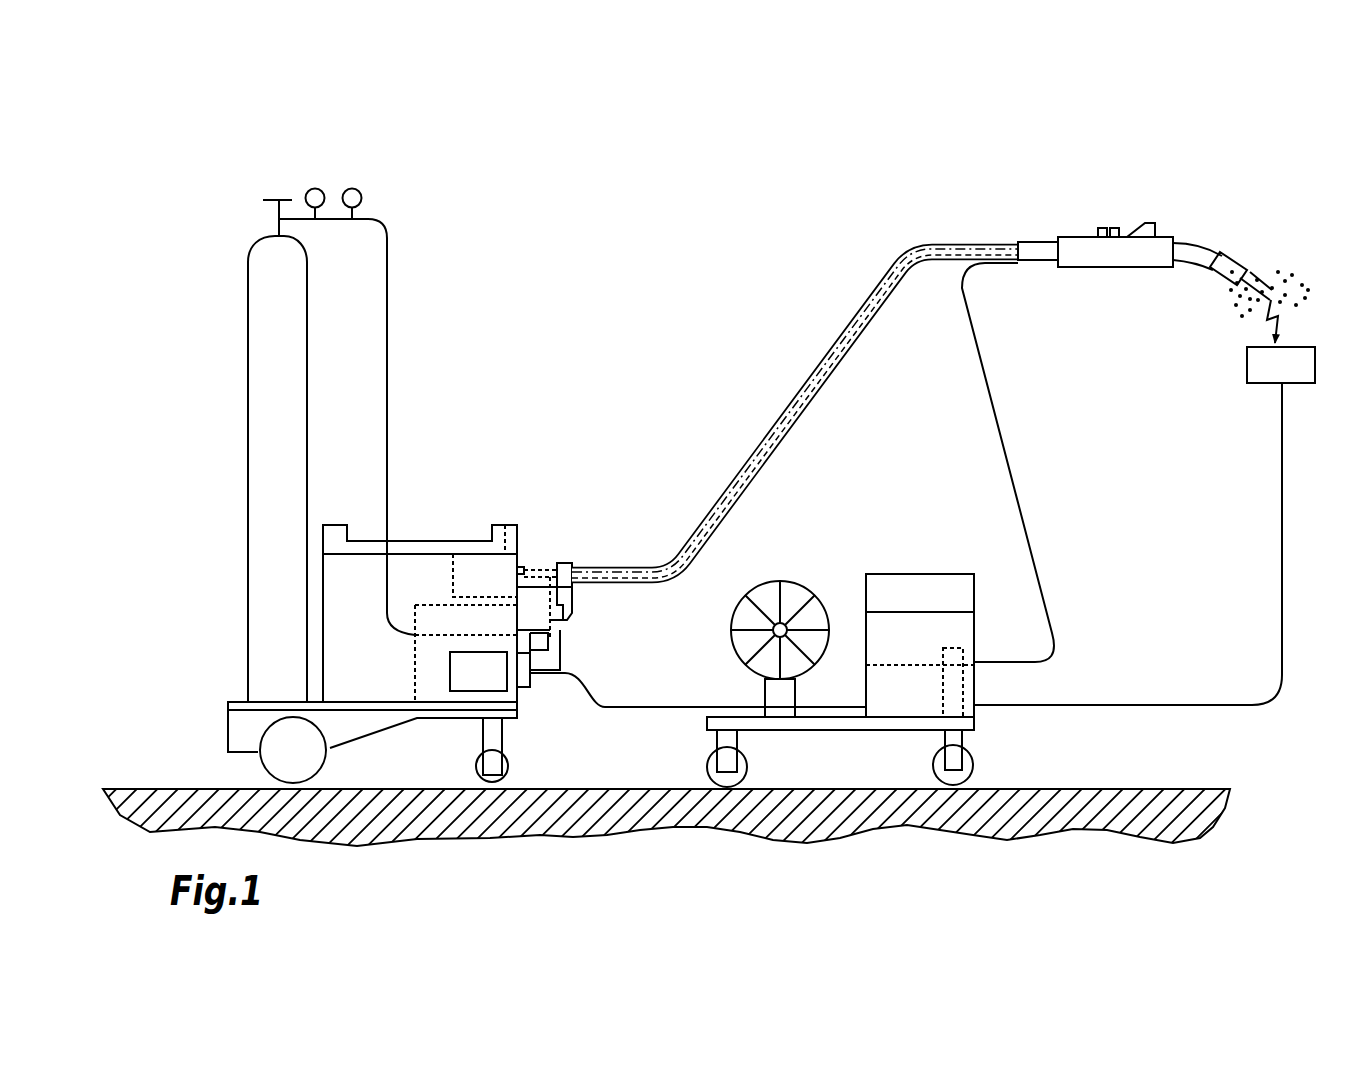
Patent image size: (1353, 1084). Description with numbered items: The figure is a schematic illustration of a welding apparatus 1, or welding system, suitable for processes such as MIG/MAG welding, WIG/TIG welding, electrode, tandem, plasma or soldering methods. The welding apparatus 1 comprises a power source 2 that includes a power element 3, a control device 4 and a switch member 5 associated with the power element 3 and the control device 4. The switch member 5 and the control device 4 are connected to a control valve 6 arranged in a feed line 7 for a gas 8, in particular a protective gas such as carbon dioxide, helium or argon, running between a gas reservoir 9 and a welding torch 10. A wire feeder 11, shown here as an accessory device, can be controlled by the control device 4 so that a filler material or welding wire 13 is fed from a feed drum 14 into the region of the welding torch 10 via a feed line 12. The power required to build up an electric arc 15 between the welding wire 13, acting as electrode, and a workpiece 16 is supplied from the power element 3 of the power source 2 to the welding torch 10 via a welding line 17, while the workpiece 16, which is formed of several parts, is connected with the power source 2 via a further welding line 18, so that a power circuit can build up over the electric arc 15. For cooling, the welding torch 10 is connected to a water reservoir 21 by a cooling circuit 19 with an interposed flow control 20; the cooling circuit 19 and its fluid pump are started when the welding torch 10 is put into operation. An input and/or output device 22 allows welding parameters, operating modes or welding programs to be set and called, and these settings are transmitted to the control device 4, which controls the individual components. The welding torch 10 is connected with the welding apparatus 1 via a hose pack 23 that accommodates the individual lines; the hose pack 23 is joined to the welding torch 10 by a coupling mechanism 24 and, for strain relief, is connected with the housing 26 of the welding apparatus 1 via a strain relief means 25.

The welding apparatus 1 is at (177, 188).
The power source 2 is at (468, 410).
The power element 3 is at (478, 673).
The control device 4 is at (374, 703).
The switch member 5 is at (531, 706).
The control valve 6 is at (530, 647).
The feed line 7 is at (945, 262).
The gas 8 is at (1250, 250).
The gas reservoir 9 is at (277, 317).
The welding torch 10 is at (1162, 205).
The wire feeder 11 is at (1023, 750).
The feed line 12 is at (1017, 490).
The welding wire 13 is at (1255, 275).
The feed drum 14 is at (788, 597).
The electric arc 15 is at (1258, 332).
The workpiece 16 is at (1292, 363).
The welding line 17 is at (870, 308).
The further welding line 18 is at (1283, 565).
The cooling circuit 19 is at (730, 495).
The flow control 20 is at (523, 567).
The water reservoir 21 is at (477, 563).
The input and/or output device 22 is at (508, 540).
The hose pack 23 is at (628, 565).
The coupling mechanism 24 is at (1037, 253).
The strain relief means 25 is at (565, 565).
The housing 26 is at (568, 598).